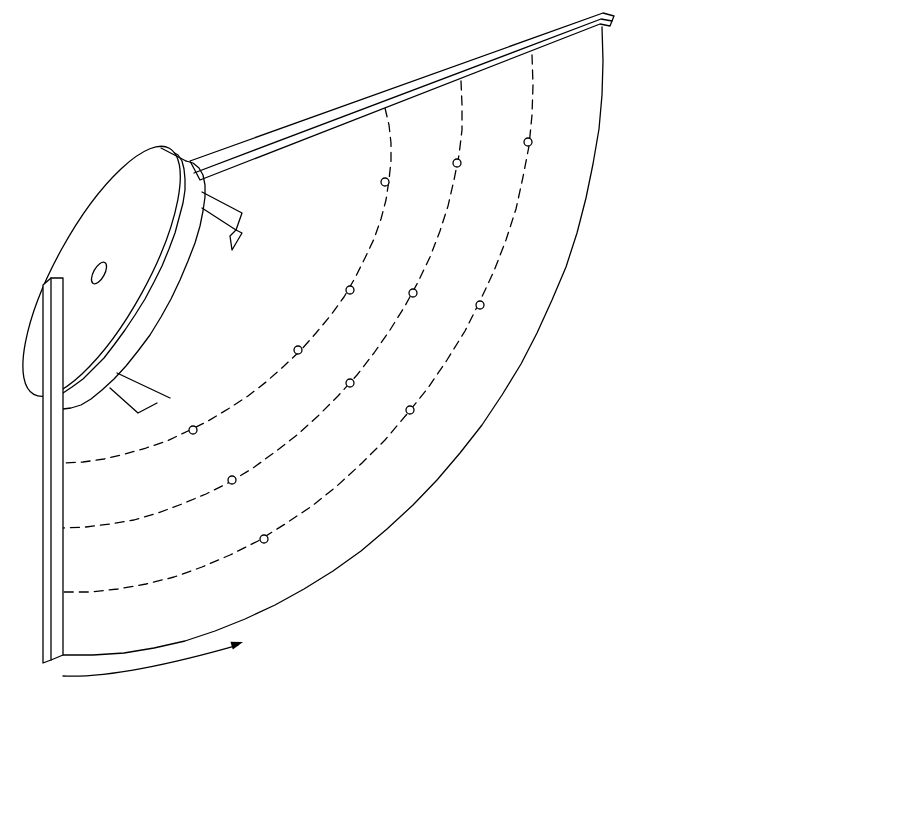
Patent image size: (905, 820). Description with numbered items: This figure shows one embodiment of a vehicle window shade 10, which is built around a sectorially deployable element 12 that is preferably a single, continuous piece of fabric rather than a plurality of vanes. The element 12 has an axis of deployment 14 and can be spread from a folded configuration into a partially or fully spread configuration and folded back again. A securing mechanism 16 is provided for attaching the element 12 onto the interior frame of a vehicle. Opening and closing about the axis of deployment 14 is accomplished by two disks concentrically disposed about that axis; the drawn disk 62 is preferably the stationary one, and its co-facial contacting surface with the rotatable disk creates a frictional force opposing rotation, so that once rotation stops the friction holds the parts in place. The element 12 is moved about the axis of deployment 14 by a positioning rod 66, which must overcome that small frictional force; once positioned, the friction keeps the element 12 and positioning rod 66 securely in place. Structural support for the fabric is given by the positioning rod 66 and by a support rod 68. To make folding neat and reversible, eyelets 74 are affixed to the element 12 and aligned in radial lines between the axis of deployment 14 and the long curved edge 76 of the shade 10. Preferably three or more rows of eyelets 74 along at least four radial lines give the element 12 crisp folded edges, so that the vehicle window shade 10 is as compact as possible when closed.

The vehicle window shade 10 is at (769, 77).
The sectorially deployable element 12 is at (563, 186).
The axis of deployment 14 is at (96, 262).
The securing mechanism 16 is at (222, 216).
The disk 62 is at (136, 186).
The positioning rod 66 is at (53, 664).
The support rod 68 is at (361, 100).
The eyelets 74 is at (268, 540).
The curved edge 76 is at (455, 463).